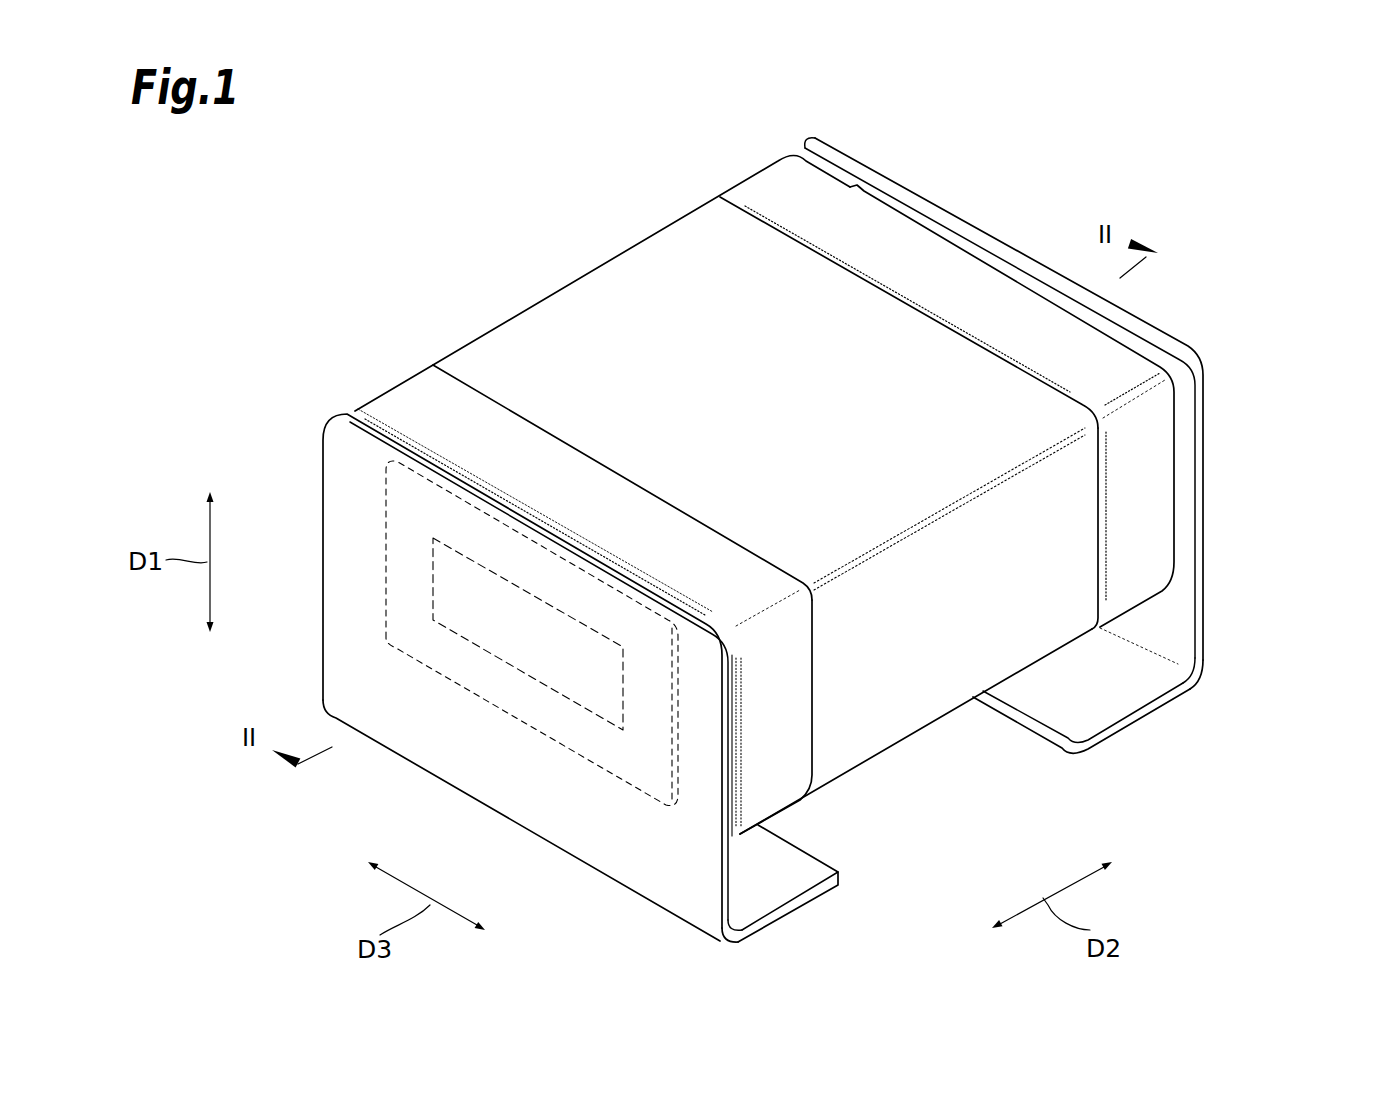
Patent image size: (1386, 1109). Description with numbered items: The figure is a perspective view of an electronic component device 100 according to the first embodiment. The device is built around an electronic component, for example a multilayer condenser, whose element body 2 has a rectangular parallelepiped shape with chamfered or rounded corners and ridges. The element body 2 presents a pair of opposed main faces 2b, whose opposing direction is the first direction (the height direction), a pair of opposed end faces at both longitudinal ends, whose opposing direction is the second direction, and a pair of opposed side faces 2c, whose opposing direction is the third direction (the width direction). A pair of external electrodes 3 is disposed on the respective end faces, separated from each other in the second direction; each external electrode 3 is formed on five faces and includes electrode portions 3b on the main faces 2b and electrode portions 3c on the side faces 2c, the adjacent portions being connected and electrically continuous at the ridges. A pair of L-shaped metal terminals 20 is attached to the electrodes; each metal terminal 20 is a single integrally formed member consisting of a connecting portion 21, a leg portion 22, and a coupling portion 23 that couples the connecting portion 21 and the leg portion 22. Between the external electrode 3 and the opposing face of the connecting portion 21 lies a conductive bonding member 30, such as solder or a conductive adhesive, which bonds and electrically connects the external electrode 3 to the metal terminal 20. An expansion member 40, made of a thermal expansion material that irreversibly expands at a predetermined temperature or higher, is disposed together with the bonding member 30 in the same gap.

The electronic component device 100 is at (1278, 262).
The element body 2 is at (510, 312).
The main face 2b is at (627, 366).
The side face 2c is at (896, 668).
The external electrode 3 is at (372, 372).
The electrode portion 3b is at (467, 430).
The electrode portion 3c is at (772, 723).
The metal terminal 20 is at (514, 836).
The connecting portion 21 is at (667, 865).
The leg portion 22 is at (787, 925).
The coupling portion 23 is at (733, 947).
The bonding member 30 is at (432, 598).
The expansion member 40 is at (384, 468).